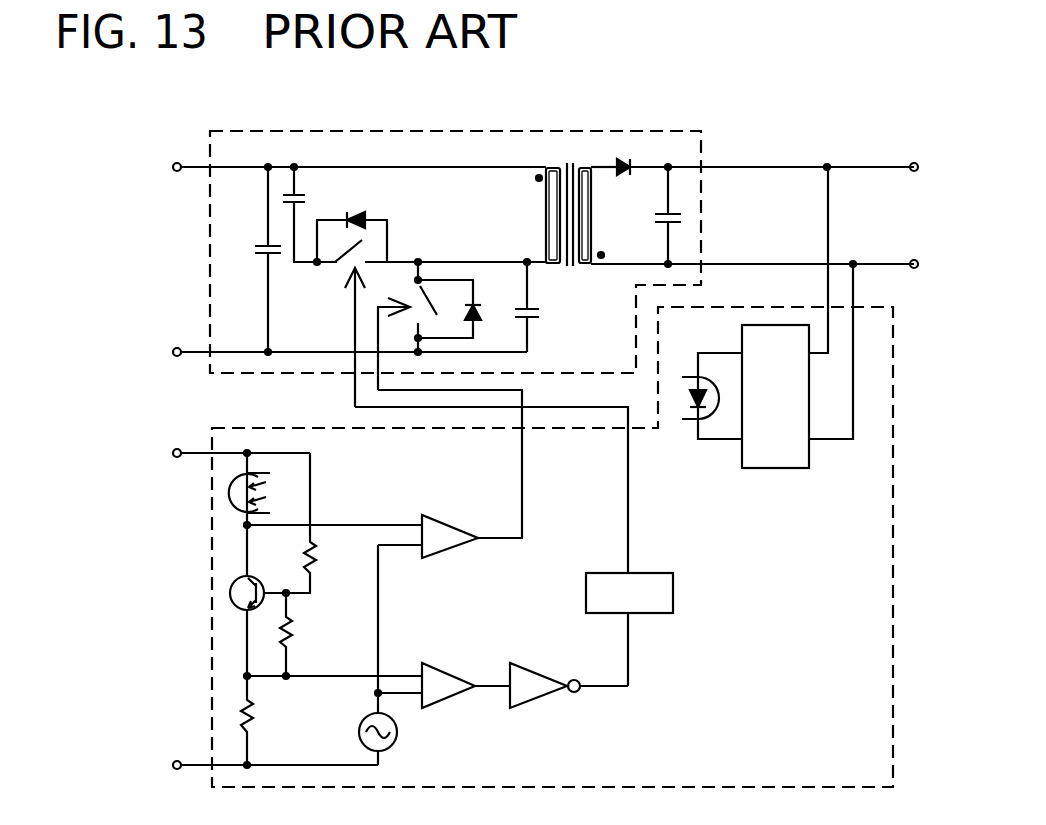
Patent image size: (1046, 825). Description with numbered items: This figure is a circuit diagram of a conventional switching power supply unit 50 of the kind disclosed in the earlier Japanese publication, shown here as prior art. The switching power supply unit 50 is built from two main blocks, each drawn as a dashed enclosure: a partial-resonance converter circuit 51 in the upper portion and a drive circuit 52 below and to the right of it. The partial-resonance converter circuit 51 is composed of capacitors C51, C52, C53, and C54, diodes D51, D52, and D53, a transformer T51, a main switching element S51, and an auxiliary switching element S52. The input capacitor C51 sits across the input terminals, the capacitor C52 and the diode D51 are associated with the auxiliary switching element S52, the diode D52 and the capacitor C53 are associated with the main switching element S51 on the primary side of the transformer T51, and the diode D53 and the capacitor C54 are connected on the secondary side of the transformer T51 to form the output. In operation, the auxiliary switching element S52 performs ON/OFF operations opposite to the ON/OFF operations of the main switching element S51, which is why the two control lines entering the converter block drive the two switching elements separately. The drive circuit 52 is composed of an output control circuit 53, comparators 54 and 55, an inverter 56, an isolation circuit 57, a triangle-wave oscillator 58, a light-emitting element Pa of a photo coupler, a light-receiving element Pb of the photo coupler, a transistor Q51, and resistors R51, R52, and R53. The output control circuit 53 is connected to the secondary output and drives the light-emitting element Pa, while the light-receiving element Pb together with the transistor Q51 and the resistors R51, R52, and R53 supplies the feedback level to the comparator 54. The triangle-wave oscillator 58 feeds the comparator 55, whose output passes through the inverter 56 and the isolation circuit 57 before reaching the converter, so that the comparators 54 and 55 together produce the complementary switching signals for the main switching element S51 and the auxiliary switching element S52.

The switching power supply unit 50 is at (827, 96).
The partial-resonance converter circuit 51 is at (222, 231).
The drive circuit 52 is at (222, 643).
The output control circuit 53 is at (785, 468).
The comparator 54 is at (445, 543).
The comparator 55 is at (445, 697).
The inverter 56 is at (538, 697).
The isolation circuit 57 is at (667, 593).
The triangle-wave oscillator 58 is at (393, 742).
The capacitor C51 is at (254, 259).
The capacitor C52 is at (313, 214).
The capacitor C53 is at (540, 307).
The capacitor C54 is at (647, 215).
The diode D51 is at (357, 229).
The diode D52 is at (469, 313).
The diode D53 is at (752, 158).
The main switching element S51 is at (419, 324).
The auxiliary switching element S52 is at (358, 323).
The transformer T51 is at (570, 204).
The light-emitting element of photo coupler Pa is at (709, 396).
The light-receiving element of photo coupler Pb is at (269, 489).
The transistor Q51 is at (268, 600).
The resistor R51 is at (269, 722).
The resistor R52 is at (316, 636).
The resistor R53 is at (319, 524).